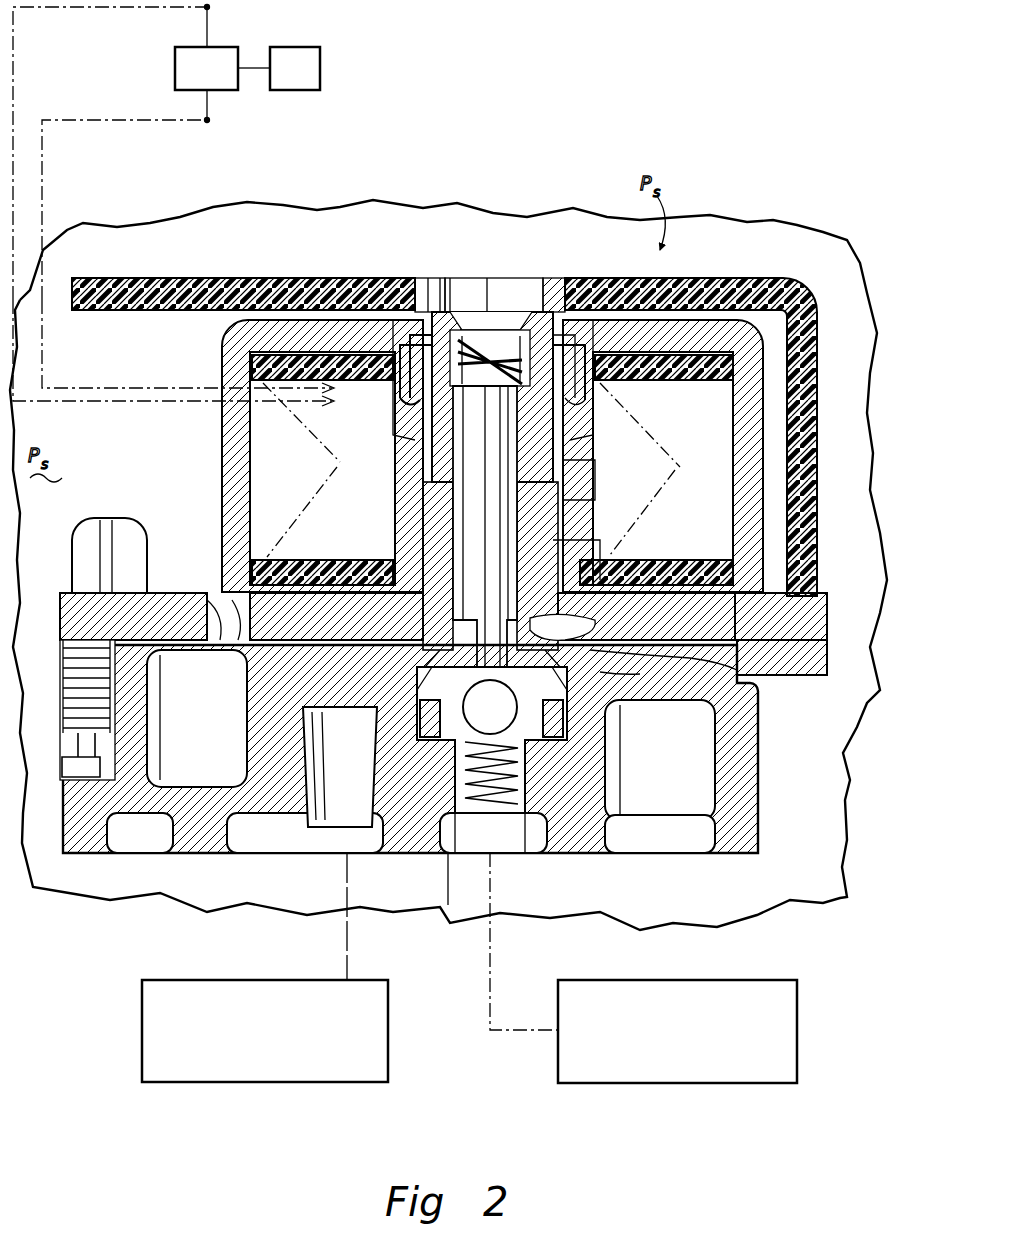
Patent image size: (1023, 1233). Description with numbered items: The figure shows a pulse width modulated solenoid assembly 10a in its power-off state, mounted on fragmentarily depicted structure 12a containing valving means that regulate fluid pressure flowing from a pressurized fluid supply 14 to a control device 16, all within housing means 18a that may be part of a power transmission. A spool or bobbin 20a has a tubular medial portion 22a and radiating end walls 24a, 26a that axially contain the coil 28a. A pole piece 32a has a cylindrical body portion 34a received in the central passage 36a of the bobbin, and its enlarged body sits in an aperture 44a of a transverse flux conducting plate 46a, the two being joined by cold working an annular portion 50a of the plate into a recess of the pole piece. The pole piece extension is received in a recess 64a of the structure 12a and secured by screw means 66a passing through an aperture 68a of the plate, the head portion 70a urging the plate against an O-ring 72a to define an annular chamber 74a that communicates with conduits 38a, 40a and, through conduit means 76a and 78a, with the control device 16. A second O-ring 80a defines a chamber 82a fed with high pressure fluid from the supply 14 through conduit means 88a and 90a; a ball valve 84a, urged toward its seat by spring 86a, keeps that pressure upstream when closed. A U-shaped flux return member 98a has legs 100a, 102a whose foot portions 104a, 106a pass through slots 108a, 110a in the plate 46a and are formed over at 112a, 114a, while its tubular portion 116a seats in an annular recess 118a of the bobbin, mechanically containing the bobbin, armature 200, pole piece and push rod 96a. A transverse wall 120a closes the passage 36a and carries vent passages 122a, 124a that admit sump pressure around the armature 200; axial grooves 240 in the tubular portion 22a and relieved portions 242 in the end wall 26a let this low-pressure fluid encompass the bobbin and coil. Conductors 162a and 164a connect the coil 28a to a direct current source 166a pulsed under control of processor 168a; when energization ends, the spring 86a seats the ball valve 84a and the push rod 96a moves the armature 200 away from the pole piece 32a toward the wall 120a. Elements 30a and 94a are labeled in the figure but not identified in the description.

The solenoid assembly 10a is at (186, 469).
The overall structure 12a is at (762, 782).
The pressurized fluid supply 14 is at (710, 1086).
The control device 16 is at (206, 1086).
The housing means 18a is at (708, 222).
The spool assembly 20a is at (292, 562).
The tubular medial portion 22a is at (402, 490).
The end wall 24a is at (305, 385).
The end wall 26a is at (346, 580).
The coil 28a is at (247, 503).
The top plate 30a is at (165, 278).
The pole piece 32a is at (648, 699).
The cylindrical body portion 34a is at (558, 516).
The central passage 36a is at (404, 522).
The conduit 38a is at (441, 748).
The conduit 40a is at (610, 752).
The aperture 44a is at (602, 624).
The flux conducting plate 46a is at (150, 756).
The annular portion 50a is at (596, 630).
The recess 64a is at (548, 855).
The screw means 66a is at (92, 549).
The aperture 68a is at (108, 641).
The head portion 70a is at (96, 571).
The O-ring seal 72a is at (692, 660).
The annular chamber 74a is at (642, 674).
The conduit means 76a is at (320, 757).
The conduit means 78a is at (345, 940).
The O-ring seal 80a is at (612, 782).
The chamber 82a is at (443, 776).
The ball valve 84a is at (491, 708).
The spring 86a is at (516, 853).
The conduit means 88a is at (495, 1000).
The conduit means 90a is at (448, 905).
The flange 94a is at (560, 356).
The push rod 96a is at (614, 384).
The flux return member 98a is at (775, 320).
The leg 100a is at (226, 450).
The leg 102a is at (776, 372).
The foot portion 104a is at (212, 602).
The foot portion 106a is at (772, 590).
The slot 108a is at (138, 733).
The slot 110a is at (762, 633).
The formed-over portion 112a is at (133, 686).
The formed-over portion 114a is at (874, 719).
The tubular cylindrical portion 116a is at (330, 416).
The annular recess 118a is at (562, 428).
The transverse wall portion 120a is at (483, 280).
The vent passage 122a is at (440, 280).
The vent passage 124a is at (548, 280).
The conductor 162a is at (170, 10).
The conductor 164a is at (160, 120).
The direct current power source 166a is at (218, 47).
The electronic processor 168a is at (320, 68).
The armature means 200 is at (420, 352).
The slot 240 is at (622, 497).
The relieved portion 242 is at (600, 573).